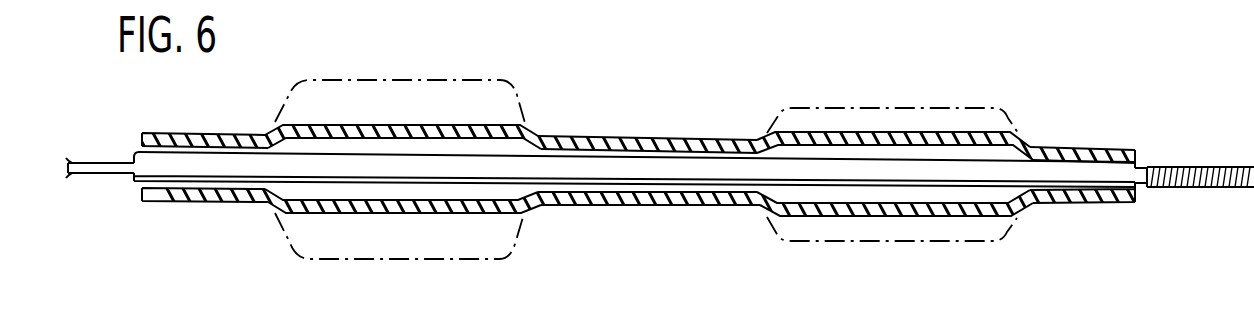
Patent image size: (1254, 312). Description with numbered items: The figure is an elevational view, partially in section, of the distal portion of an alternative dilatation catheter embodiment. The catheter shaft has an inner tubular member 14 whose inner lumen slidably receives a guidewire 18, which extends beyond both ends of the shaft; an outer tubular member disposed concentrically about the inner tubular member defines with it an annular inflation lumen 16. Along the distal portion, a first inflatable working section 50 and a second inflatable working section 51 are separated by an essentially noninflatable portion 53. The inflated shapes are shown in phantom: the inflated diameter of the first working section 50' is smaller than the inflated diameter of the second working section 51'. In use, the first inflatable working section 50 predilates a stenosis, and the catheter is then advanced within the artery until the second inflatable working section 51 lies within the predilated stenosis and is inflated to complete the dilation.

The inner tubular member 14 is at (191, 166).
The annular inflation lumen 16 is at (212, 146).
The guidewire 18 is at (84, 173).
The first inflatable working section 50 is at (895, 143).
The inflated diameter of the first working section 50' is at (892, 158).
The second inflatable working section 51 is at (403, 127).
The inflated diameter of the second working section 51' is at (400, 151).
The essentially noninflatable portion 53 is at (617, 138).